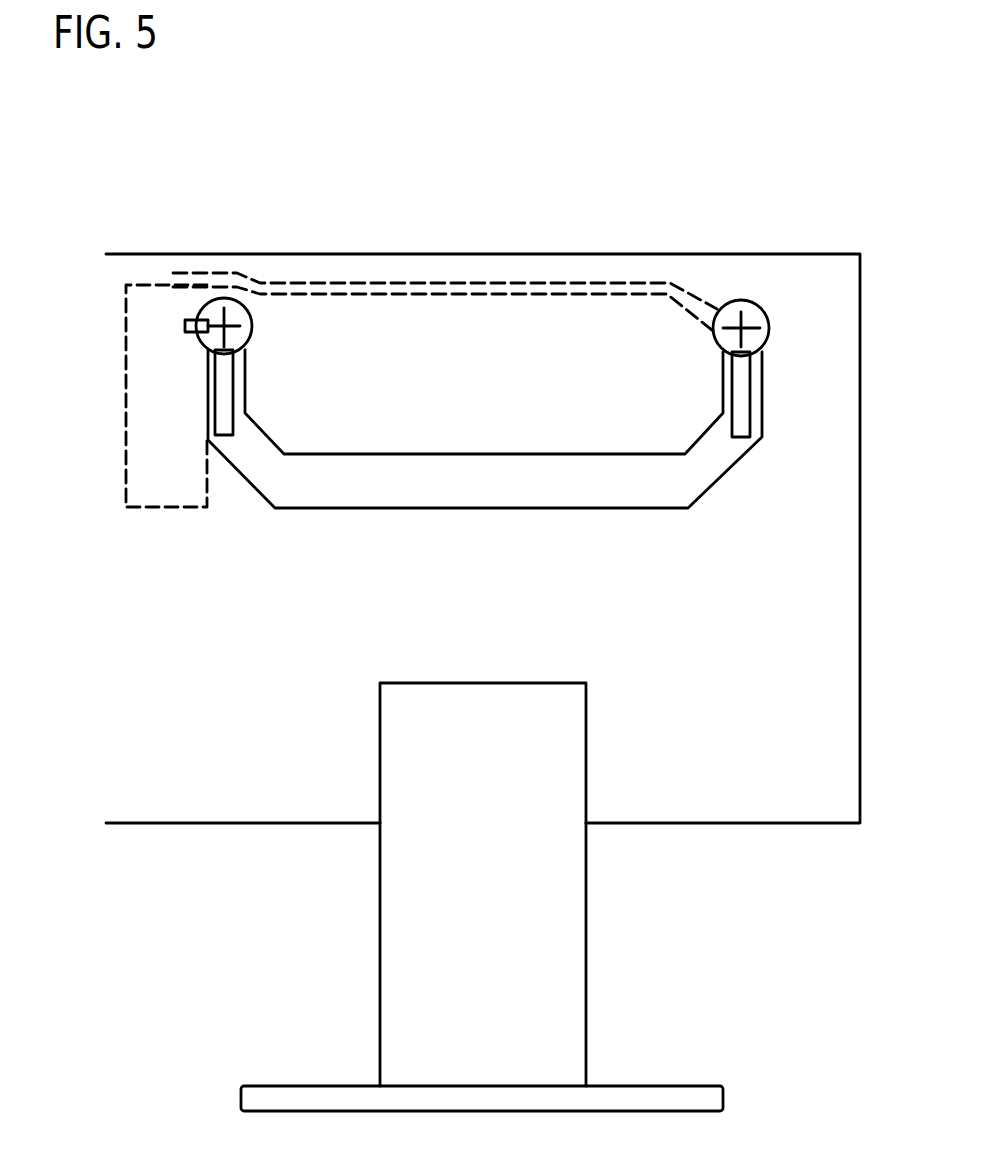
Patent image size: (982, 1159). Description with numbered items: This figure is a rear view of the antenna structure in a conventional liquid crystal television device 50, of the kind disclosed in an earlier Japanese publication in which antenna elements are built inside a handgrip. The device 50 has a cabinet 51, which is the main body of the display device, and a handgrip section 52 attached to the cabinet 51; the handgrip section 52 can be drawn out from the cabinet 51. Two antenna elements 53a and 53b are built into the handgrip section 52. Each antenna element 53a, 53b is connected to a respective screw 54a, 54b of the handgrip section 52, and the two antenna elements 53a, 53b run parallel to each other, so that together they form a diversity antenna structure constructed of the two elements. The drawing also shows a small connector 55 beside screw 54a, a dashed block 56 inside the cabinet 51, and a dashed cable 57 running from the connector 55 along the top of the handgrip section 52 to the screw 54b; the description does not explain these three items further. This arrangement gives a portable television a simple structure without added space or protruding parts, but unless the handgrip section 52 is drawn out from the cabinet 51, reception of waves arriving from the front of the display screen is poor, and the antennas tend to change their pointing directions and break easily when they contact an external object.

The liquid crystal television device 50 is at (597, 215).
The cabinet 51 is at (729, 263).
The handgrip section 52 is at (508, 455).
The antenna element 53a is at (228, 390).
The antenna element 53b is at (747, 420).
The screw 54a is at (252, 331).
The screw 54b is at (767, 338).
The connector 55 is at (186, 320).
The control unit (dashed box) 56 is at (132, 372).
The cable 57 is at (489, 282).